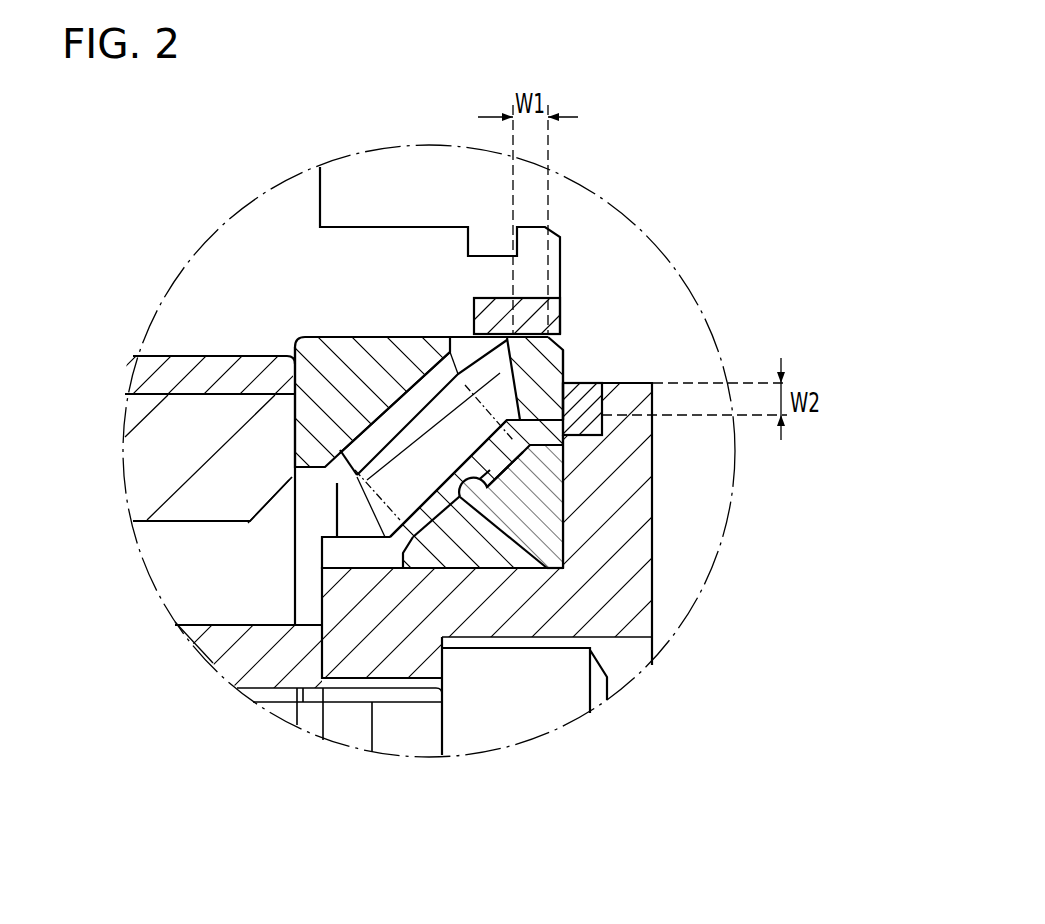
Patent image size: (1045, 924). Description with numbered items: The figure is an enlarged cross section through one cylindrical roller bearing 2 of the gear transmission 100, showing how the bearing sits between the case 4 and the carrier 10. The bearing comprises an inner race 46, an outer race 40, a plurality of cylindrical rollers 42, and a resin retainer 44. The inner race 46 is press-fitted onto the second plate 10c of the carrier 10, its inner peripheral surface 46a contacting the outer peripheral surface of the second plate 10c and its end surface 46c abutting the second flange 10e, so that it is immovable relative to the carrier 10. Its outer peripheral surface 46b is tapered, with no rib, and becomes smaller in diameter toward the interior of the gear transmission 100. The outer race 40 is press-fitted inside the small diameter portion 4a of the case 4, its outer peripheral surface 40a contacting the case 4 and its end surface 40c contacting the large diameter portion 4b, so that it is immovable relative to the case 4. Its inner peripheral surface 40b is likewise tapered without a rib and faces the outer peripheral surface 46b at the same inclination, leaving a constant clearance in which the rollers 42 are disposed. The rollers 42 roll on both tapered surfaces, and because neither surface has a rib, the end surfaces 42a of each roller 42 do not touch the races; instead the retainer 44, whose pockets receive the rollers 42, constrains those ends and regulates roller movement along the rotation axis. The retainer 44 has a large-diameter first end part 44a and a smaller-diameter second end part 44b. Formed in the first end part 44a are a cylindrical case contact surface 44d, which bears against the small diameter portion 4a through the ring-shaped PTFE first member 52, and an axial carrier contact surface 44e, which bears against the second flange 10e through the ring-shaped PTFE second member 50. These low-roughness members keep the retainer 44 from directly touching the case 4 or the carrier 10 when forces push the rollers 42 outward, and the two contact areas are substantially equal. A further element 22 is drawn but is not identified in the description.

The cylindrical roller bearing 2 is at (624, 251).
The gear transmission 100 is at (692, 98).
The case 4 is at (304, 294).
The small diameter portion 4a is at (390, 247).
The large diameter portion 4b is at (183, 318).
The carrier 10 is at (506, 584).
The second plate 10c is at (550, 620).
The second flange 10e is at (567, 495).
The holding member 22 is at (153, 428).
The outer race 40 is at (287, 356).
The outer peripheral surface of the outer race 40a is at (333, 357).
The inner peripheral surface of the outer race 40b is at (362, 352).
The end surface of the outer race 40c is at (290, 384).
The rollers 42 is at (305, 301).
The end surfaces of the roller 42a is at (482, 340).
The retainer 44 is at (559, 528).
The first end part 44a is at (563, 372).
The second end part 44b is at (350, 523).
The case contact surface 44d is at (553, 297).
The carrier contact surface 44e is at (643, 383).
The inner race 46 is at (627, 561).
The inner peripheral surface of the inner race 46a is at (507, 567).
The outer peripheral surface of the inner race 46b is at (545, 567).
The end surface of the inner race 46c is at (553, 525).
The second member 50 is at (588, 422).
The first member 52 is at (552, 295).